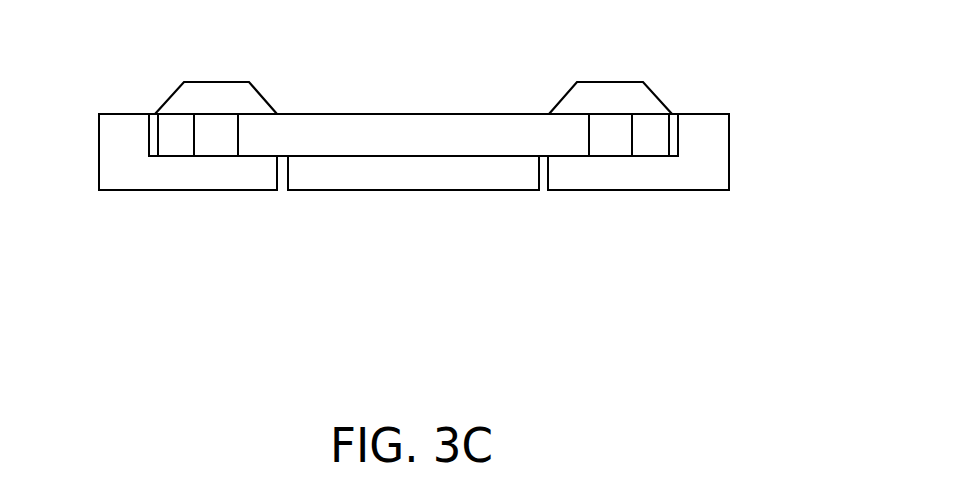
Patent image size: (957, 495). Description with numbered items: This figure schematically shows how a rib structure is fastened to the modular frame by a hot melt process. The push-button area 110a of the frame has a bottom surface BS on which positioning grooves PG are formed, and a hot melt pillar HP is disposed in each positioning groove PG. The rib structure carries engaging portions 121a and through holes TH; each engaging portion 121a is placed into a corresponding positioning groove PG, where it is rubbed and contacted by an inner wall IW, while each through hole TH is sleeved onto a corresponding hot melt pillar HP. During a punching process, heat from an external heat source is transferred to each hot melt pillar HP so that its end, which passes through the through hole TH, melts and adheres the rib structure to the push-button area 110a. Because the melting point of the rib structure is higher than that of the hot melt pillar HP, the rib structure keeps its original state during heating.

The push-button area 110a is at (148, 182).
The engaging portion 121a is at (178, 145).
The positioning groove PG is at (152, 113).
The hot melt pillar HP is at (215, 124).
The bottom surface BS is at (647, 152).
The through hole TH is at (240, 135).
The inner wall IW is at (681, 135).